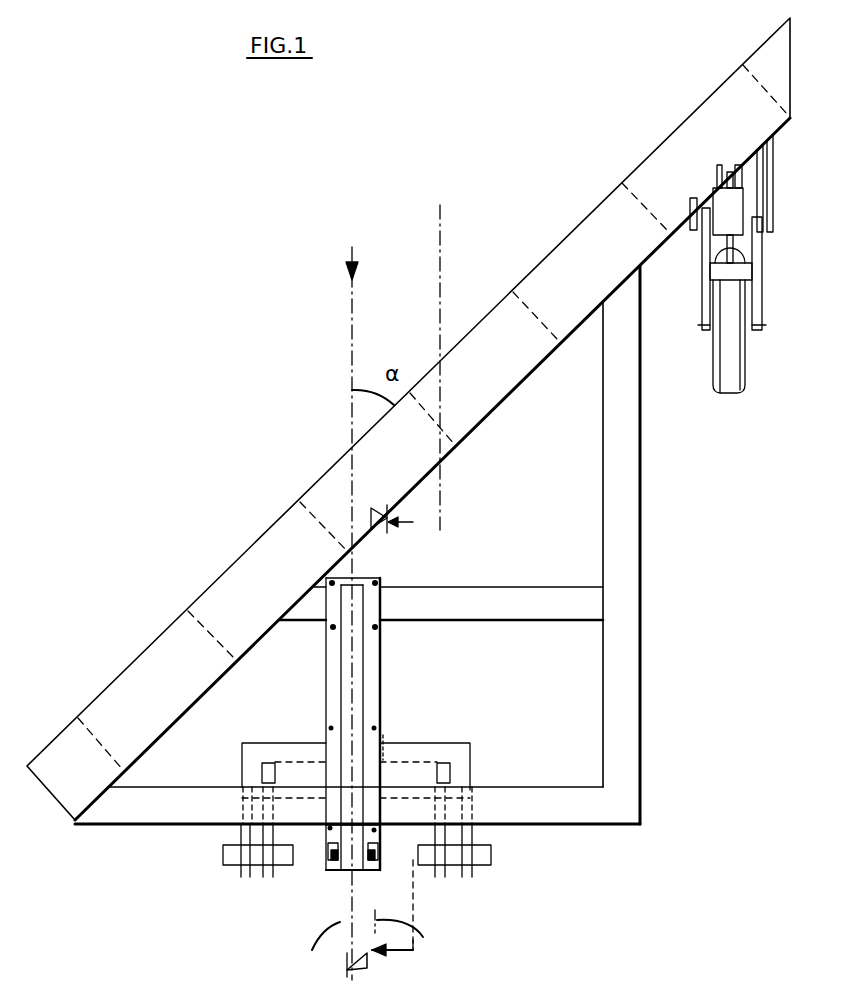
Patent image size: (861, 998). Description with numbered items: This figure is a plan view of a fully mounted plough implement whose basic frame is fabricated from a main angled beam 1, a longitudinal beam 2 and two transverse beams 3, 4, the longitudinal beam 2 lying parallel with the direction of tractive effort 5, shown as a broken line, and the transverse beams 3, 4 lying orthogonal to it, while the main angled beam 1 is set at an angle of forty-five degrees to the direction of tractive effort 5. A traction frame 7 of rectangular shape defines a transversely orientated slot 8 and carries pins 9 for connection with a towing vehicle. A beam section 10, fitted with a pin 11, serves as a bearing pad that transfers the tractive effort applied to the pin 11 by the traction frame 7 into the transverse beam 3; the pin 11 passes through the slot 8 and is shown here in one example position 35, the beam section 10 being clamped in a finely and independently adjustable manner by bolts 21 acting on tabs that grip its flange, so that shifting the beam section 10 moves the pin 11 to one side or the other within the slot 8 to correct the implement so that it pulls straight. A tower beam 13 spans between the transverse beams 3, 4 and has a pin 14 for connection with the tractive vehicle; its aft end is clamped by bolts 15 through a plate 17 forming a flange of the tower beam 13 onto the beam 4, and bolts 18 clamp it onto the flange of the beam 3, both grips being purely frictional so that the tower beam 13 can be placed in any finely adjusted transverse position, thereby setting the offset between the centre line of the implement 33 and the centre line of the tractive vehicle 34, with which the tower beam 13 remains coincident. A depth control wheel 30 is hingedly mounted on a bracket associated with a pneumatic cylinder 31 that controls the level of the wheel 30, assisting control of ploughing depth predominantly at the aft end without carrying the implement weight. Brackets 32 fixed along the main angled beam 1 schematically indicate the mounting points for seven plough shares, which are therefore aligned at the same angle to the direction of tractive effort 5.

The main angled beam 1 is at (480, 343).
The longitudinal beam 2 is at (641, 522).
The transverse beam 3 is at (523, 818).
The transverse beam 4 is at (485, 610).
The direction of tractive effort 5 is at (352, 348).
The traction frame 7 is at (460, 760).
The slot 8 is at (268, 760).
The pin 9 is at (262, 877).
The beam section 10 is at (283, 742).
The pin 11 is at (388, 737).
The tower beam 13 is at (378, 662).
The pin 14 is at (372, 873).
The bolt 15 is at (336, 624).
The plate 17 is at (332, 657).
The bolt 18 is at (330, 848).
The bolt 21 is at (331, 725).
The depth control wheel 30 is at (735, 355).
The pneumatic cylinder 31 is at (735, 215).
The bracket 32 is at (746, 68).
The centre line of the implement 33 is at (441, 224).
The centre line of the tractive vehicle 34 is at (311, 945).
The position 35 is at (414, 908).